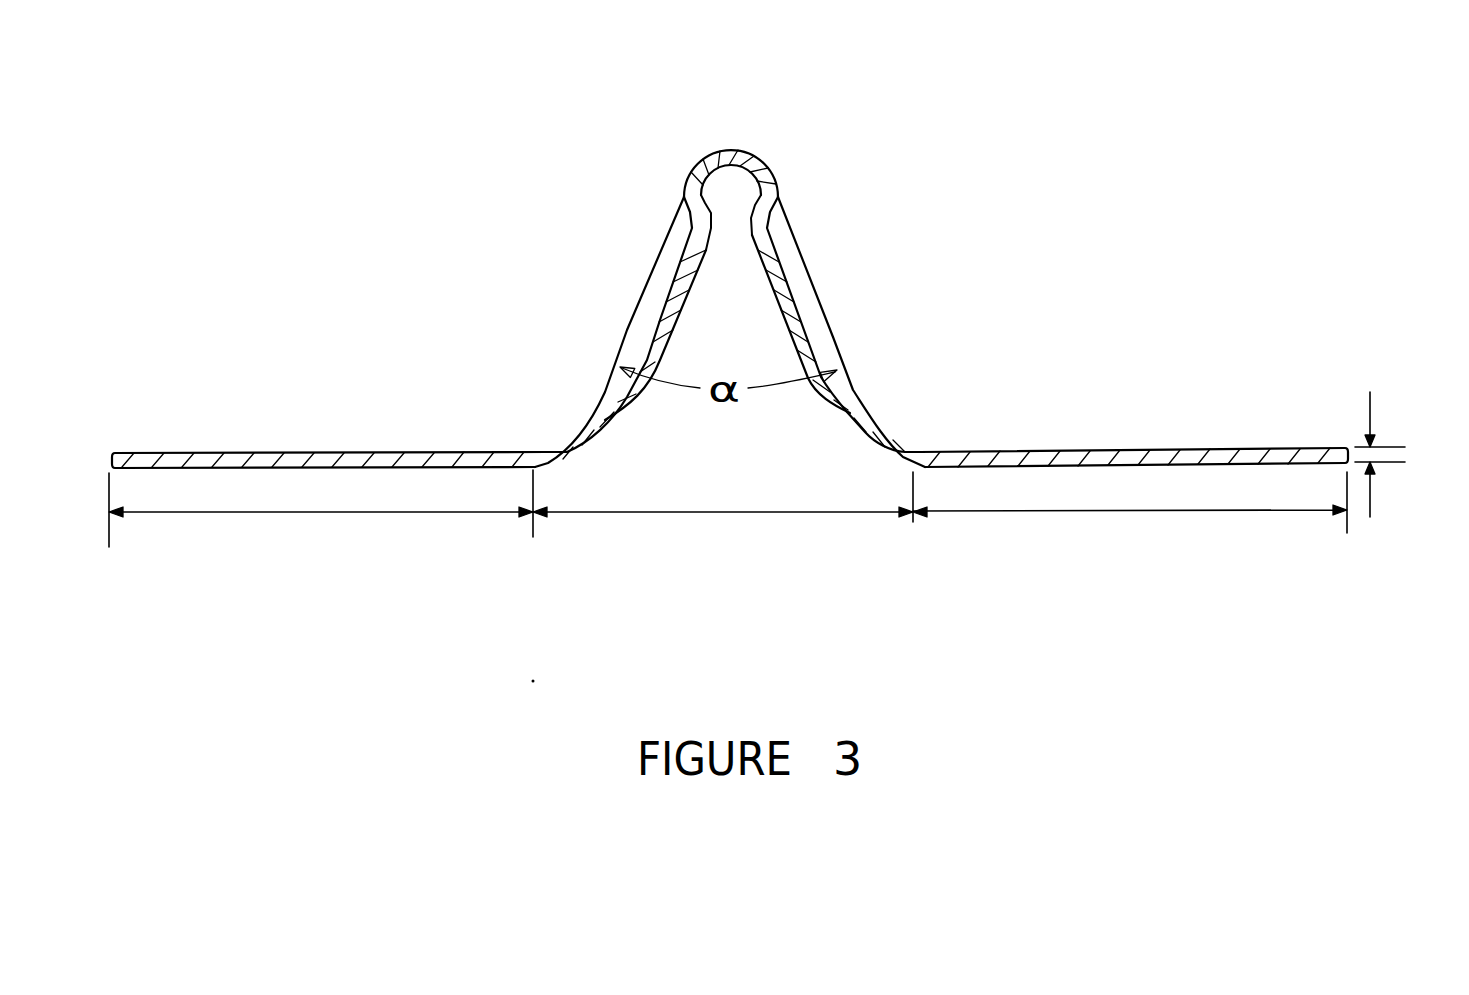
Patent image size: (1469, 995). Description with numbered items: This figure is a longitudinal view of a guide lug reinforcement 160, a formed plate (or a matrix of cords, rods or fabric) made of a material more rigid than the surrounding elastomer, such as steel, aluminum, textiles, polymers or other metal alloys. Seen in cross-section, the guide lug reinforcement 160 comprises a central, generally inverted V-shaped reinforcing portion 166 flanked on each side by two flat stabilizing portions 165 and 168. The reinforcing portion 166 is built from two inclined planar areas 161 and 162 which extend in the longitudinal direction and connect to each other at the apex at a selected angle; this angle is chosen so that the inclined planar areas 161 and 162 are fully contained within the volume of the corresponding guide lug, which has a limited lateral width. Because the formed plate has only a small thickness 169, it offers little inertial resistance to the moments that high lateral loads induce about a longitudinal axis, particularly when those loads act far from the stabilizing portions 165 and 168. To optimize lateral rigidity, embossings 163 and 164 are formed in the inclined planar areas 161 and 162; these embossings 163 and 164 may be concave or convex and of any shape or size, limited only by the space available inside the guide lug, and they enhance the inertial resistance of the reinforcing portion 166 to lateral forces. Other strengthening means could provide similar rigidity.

The guide lug reinforcement 160 is at (746, 148).
The inclined planar area 161 is at (803, 257).
The inclined planar area 162 is at (660, 253).
The embossing 163 is at (805, 328).
The embossing 164 is at (653, 332).
The stabilizing portion 165 is at (1081, 516).
The reinforcing portion 166 is at (714, 517).
The stabilizing portion 168 is at (267, 515).
The thickness 169 is at (1370, 400).